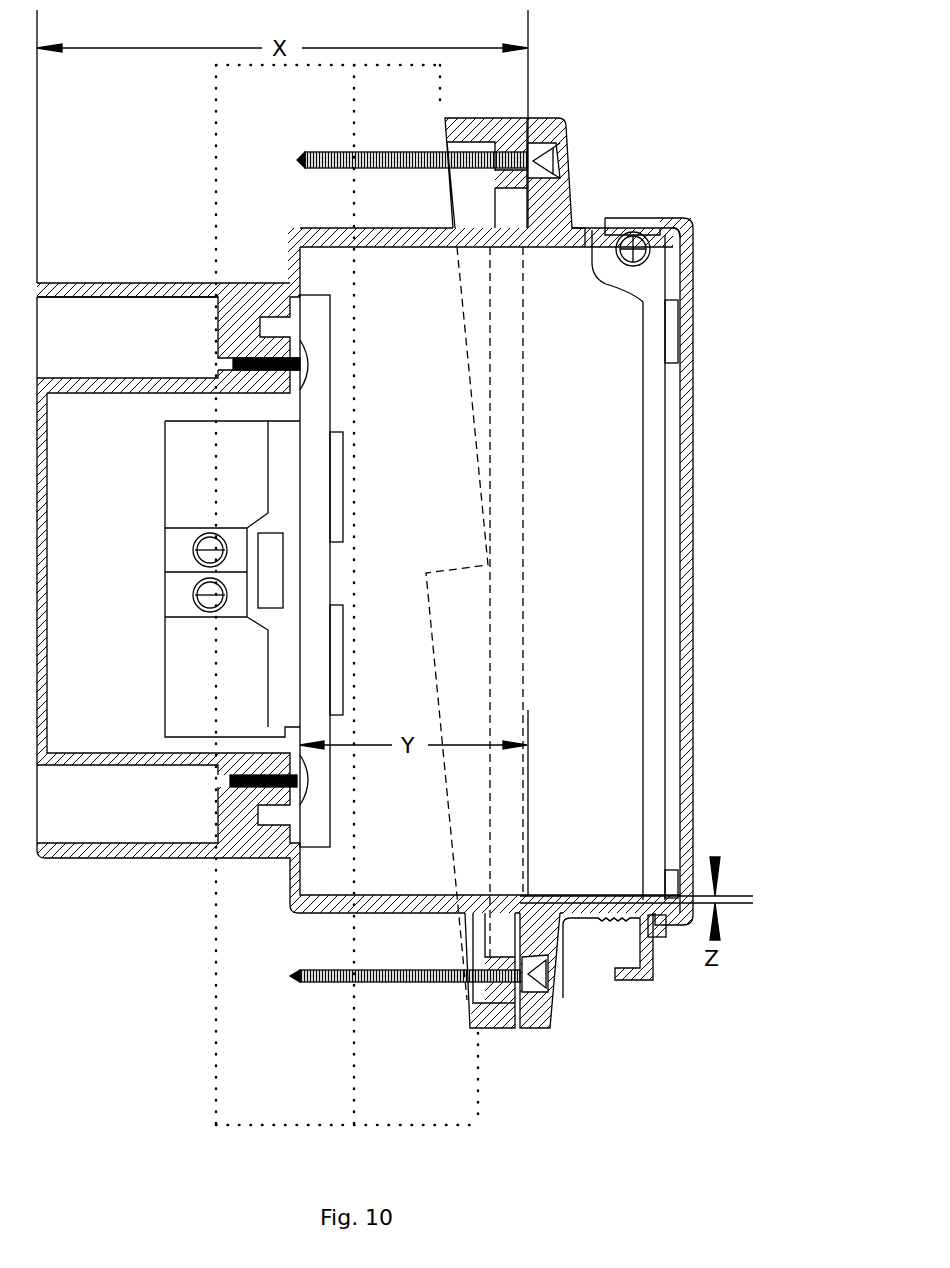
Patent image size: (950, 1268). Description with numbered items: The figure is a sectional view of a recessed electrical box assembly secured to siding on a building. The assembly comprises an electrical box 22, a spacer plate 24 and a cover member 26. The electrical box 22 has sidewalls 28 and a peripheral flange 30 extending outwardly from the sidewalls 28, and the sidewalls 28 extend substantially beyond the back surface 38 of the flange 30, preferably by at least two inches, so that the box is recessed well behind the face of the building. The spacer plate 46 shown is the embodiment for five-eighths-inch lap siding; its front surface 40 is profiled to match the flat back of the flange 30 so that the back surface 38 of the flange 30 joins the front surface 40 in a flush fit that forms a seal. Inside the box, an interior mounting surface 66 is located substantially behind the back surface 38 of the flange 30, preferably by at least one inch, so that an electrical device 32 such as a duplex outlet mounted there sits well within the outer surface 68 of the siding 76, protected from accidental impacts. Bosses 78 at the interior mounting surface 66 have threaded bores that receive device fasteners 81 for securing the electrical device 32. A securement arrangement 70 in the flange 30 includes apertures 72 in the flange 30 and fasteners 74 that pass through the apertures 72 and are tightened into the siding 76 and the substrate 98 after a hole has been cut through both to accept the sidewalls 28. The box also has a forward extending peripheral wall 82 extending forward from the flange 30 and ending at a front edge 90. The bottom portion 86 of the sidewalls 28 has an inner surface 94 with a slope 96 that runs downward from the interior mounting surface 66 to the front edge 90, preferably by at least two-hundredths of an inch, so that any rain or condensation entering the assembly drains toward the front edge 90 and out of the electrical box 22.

The electrical box 22 is at (80, 862).
The spacer plate 24 is at (495, 1030).
The cover member 26 is at (685, 488).
The sidewalls 28 is at (141, 283).
The peripheral flange 30 is at (557, 117).
The electrical device 32 is at (251, 481).
The back surface 38 is at (512, 205).
The front surface 40 is at (545, 134).
The spacer plate 46 is at (510, 118).
The interior mounting surface 66 is at (300, 870).
The outer surface 68 is at (441, 88).
The securement arrangement 70 is at (586, 994).
The apertures 72 is at (555, 960).
The fasteners 74 is at (542, 988).
The siding 76 is at (412, 113).
The bosses 78 is at (300, 342).
The device fasteners 81 is at (310, 366).
The forward extending peripheral wall 82 is at (590, 250).
The bottom portion 86 is at (412, 913).
The front edge 90 is at (690, 233).
The inner surface 94 is at (544, 880).
The slope 96 is at (594, 905).
The substrate 98 is at (297, 113).